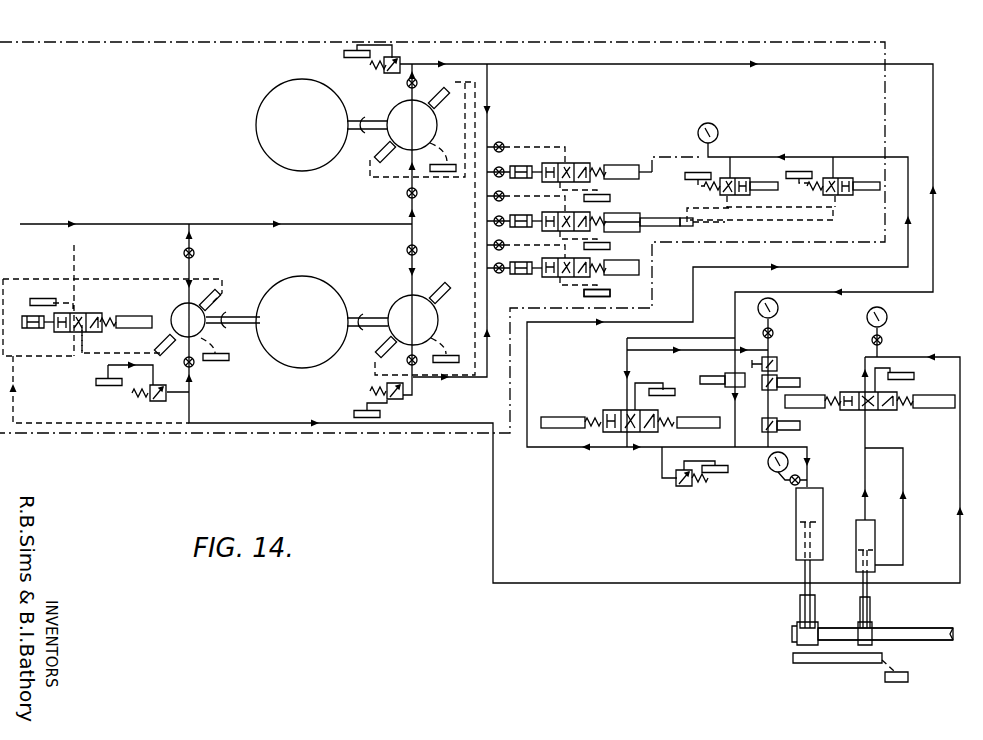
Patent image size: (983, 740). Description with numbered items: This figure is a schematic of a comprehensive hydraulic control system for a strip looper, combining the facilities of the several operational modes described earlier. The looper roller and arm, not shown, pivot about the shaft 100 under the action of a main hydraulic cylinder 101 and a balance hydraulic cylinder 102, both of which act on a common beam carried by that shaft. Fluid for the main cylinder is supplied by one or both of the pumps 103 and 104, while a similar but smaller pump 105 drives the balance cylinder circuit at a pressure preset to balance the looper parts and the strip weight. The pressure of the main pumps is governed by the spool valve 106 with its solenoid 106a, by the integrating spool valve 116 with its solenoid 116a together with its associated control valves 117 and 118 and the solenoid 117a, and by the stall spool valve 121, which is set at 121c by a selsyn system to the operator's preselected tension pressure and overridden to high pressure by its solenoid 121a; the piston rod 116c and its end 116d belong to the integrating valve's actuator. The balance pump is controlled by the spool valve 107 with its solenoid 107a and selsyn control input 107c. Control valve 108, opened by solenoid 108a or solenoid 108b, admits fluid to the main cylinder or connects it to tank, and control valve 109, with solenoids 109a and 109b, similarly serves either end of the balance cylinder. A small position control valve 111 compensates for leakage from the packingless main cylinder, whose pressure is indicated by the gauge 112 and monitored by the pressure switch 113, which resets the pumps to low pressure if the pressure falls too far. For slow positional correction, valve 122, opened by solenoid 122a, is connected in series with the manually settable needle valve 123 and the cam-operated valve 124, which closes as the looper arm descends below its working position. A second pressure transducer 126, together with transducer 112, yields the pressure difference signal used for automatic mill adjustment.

The shaft 100 is at (937, 636).
The main hydraulic cylinder 101 is at (811, 522).
The balance hydraulic cylinder 102 is at (868, 523).
The pump 103 is at (406, 117).
The pump 104 is at (406, 312).
The pump 105 is at (186, 314).
The spool valve 106 is at (569, 163).
The solenoid 106a is at (624, 171).
The spool valve 107 is at (82, 314).
The solenoid 107a is at (136, 316).
The control input 107c is at (118, 328).
The control valve 108 is at (623, 410).
The solenoid 108a is at (702, 418).
The solenoid 108b is at (862, 181).
The control valve 109 is at (877, 406).
The solenoid 109a is at (932, 410).
The solenoid 109b is at (815, 404).
The position control valve 111 is at (726, 375).
The pressure gauge 112 is at (775, 475).
The pressure switch 113 is at (716, 131).
The integrating spool valve 116 is at (590, 217).
The solenoid 116a is at (637, 218).
The piston rod 116c is at (638, 230).
The piston rod end 116d is at (693, 226).
The control valve 117 is at (732, 191).
The solenoid 117a is at (772, 188).
The control valve 118 is at (843, 195).
The spool valve 121 is at (562, 279).
The solenoid 121a is at (621, 257).
The setting input 121c is at (621, 290).
The valve 122 is at (800, 386).
The solenoid 122a is at (790, 378).
The needle valve 123 is at (777, 361).
The cam-operated valve 124 is at (760, 432).
The pressure transducer 126 is at (780, 307).